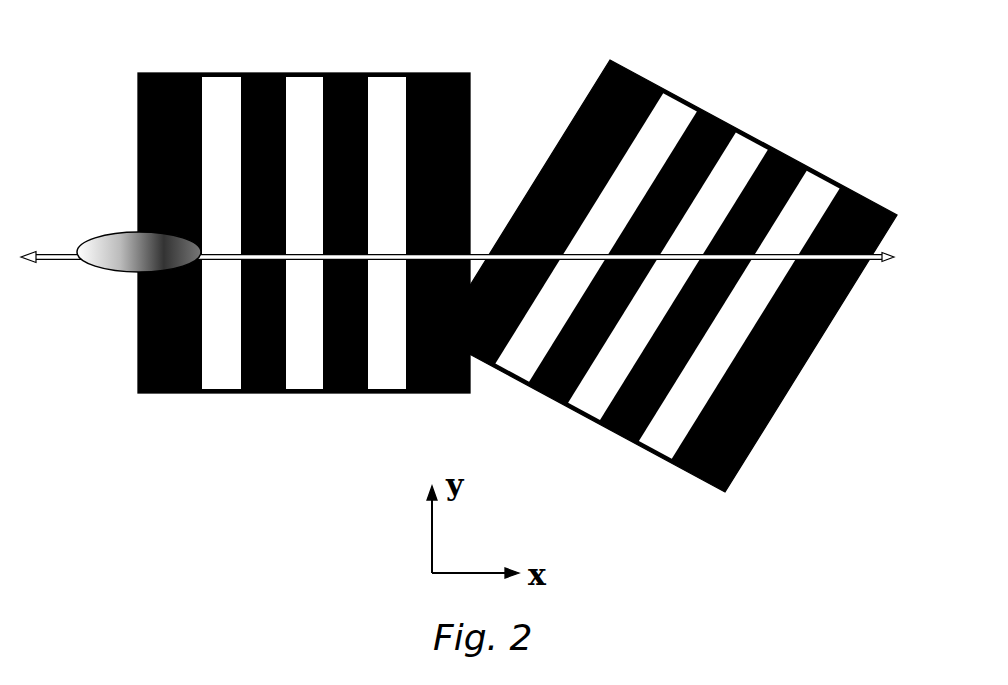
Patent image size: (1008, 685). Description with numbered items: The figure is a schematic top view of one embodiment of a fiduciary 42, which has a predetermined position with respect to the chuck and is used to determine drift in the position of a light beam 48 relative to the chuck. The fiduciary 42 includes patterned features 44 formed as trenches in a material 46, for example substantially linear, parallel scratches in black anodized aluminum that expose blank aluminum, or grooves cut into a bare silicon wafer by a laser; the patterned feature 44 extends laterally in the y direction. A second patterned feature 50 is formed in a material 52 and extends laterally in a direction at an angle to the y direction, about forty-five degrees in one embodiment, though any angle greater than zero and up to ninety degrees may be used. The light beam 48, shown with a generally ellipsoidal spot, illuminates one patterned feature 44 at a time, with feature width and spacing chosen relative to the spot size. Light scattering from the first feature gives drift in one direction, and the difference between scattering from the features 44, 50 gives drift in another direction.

The fiduciary 42 is at (517, 258).
The patterned feature 44 is at (218, 78).
The material 46 is at (329, 210).
The light beam 48 is at (104, 322).
The patterned feature 50 is at (675, 120).
The material 52 is at (667, 269).